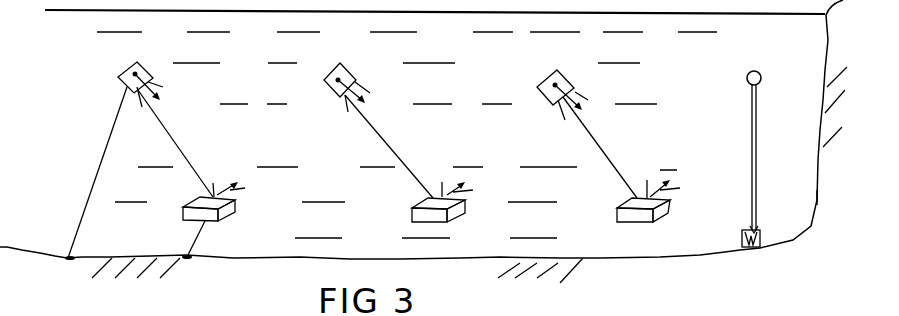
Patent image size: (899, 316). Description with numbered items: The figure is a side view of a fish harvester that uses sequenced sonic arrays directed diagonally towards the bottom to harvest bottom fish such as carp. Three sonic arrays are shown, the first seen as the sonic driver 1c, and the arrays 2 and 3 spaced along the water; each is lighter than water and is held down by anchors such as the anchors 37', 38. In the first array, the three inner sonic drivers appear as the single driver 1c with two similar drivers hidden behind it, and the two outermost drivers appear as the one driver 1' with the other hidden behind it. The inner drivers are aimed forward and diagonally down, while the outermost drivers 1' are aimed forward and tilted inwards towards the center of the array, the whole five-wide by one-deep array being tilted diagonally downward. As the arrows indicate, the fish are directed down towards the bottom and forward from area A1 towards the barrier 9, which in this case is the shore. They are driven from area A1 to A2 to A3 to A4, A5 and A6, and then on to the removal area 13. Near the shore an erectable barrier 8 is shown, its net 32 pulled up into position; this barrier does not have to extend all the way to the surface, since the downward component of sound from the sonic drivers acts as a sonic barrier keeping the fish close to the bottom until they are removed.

The sonic driver 1c is at (123, 83).
The sonic array 2 is at (327, 90).
The sonic array 3 is at (547, 95).
The outermost sonic driver 1' is at (191, 155).
The anchor 37' is at (78, 173).
The anchor 38 is at (192, 254).
The erectable barrier 8 is at (742, 77).
The net 32 is at (735, 166).
The barrier 9 is at (815, 201).
The removal area 13 is at (806, 68).
The area A1 is at (249, 156).
The area A2 is at (478, 158).
The area A3 is at (667, 161).
The area A4 is at (796, 185).
The area A5 is at (798, 153).
The area A6 is at (803, 115).